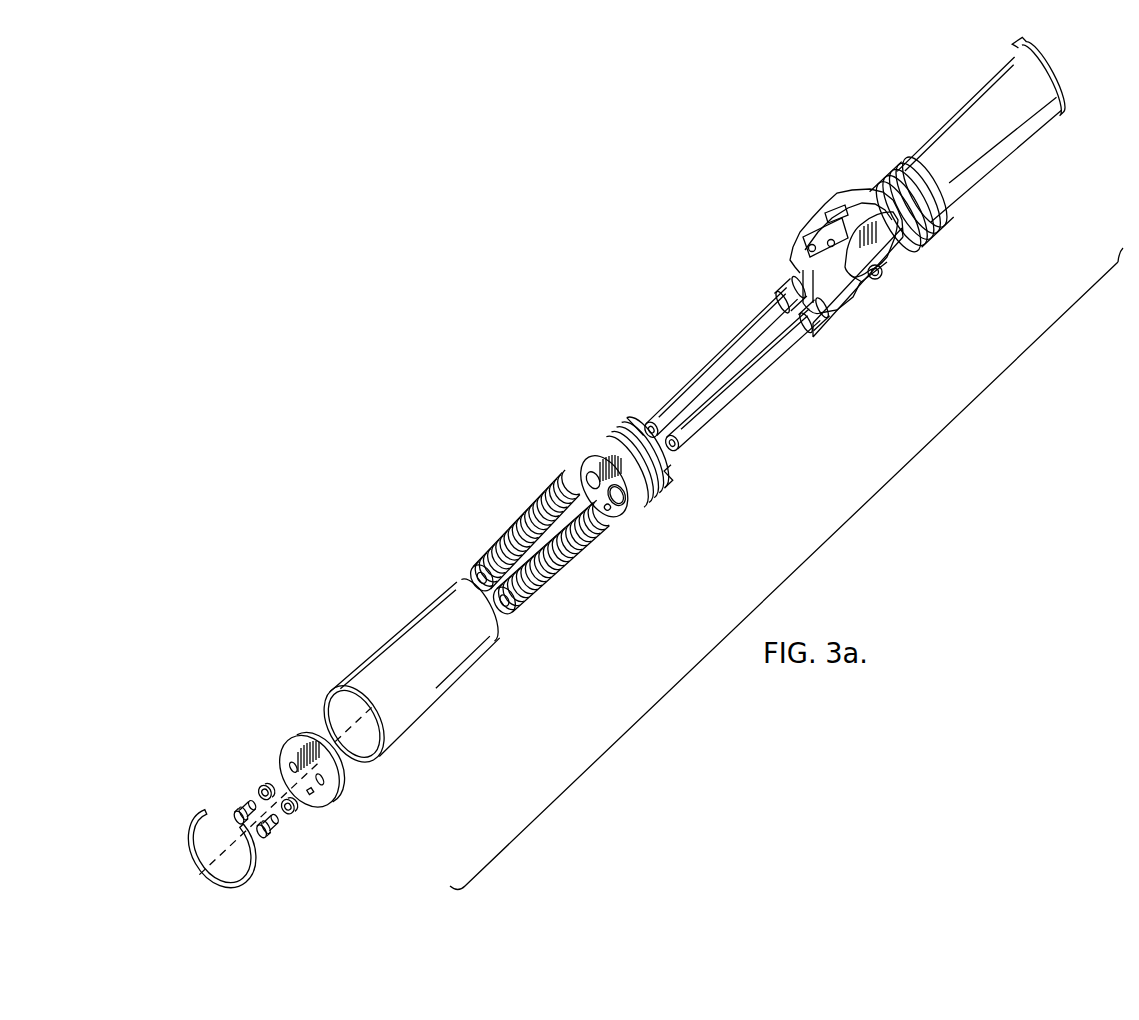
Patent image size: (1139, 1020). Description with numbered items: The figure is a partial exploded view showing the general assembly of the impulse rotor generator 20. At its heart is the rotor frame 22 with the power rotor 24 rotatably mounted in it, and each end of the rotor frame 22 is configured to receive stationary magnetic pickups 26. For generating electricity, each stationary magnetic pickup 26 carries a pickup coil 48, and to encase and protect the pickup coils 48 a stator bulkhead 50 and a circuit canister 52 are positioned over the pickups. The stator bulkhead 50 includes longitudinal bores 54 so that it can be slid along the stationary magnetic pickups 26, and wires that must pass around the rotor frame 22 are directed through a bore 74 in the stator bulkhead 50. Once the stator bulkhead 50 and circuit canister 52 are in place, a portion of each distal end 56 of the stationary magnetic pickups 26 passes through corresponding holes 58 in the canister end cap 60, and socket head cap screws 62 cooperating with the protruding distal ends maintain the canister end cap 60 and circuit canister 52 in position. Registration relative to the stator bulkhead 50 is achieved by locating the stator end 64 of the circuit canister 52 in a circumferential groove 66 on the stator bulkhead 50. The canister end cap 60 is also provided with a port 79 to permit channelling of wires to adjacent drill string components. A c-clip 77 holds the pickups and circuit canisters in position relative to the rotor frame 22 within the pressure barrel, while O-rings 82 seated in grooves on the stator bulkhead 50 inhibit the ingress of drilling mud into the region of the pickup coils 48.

The impulse rotor generator 20 is at (720, 302).
The rotor frame 22 is at (903, 262).
The power rotor 24 is at (825, 222).
The stationary magnetic pickup 26 is at (752, 375).
The pickup coil 48 is at (548, 575).
The stator bulkhead 50 is at (600, 480).
The circuit canister 52 is at (935, 148).
The longitudinal bores 54 is at (628, 508).
The distal end 56 is at (690, 440).
The holes 58 is at (285, 752).
The canister end cap 60 is at (328, 797).
The socket head cap screws 62 is at (255, 800).
The stator end 64 is at (500, 645).
The circumferential groove 66 is at (584, 468).
The bore 74 is at (606, 512).
The c-clip 77 is at (207, 822).
The port 79 is at (300, 800).
The O-rings 82 is at (935, 228).